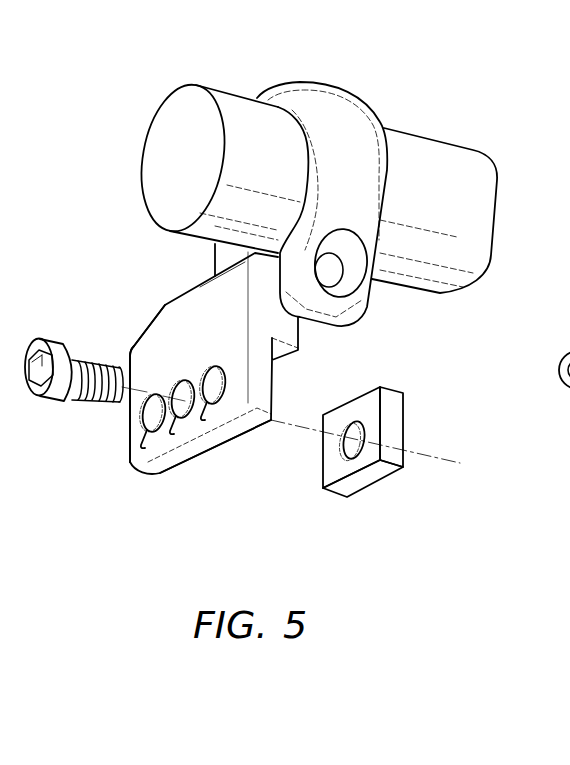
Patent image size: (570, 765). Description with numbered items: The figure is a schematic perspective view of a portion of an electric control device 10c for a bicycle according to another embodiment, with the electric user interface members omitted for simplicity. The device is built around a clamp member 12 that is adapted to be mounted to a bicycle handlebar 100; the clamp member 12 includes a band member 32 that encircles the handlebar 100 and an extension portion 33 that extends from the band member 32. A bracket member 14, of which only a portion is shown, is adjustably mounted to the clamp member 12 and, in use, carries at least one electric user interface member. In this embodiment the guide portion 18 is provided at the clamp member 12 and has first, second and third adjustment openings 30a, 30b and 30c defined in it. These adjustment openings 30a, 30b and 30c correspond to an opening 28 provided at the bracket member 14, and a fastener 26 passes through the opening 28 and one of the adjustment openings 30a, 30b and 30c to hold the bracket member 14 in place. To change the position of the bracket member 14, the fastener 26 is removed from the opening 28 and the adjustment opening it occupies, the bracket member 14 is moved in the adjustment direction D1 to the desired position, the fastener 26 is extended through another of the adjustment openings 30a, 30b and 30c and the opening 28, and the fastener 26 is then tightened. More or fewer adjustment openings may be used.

The electric control device 10c is at (321, 291).
The bicycle handlebar 100 is at (490, 175).
The band member 32 is at (345, 110).
The clamp member 12 is at (195, 394).
The extension portion 33 is at (143, 350).
The guide portion 18 is at (267, 430).
The first adjustment opening 30a is at (143, 450).
The second adjustment opening 30b is at (182, 436).
The third adjustment opening 30c is at (217, 421).
The fastener 26 is at (82, 400).
The bracket member 14 is at (390, 459).
The opening 28 is at (353, 448).
The adjustment direction D1 is at (247, 517).